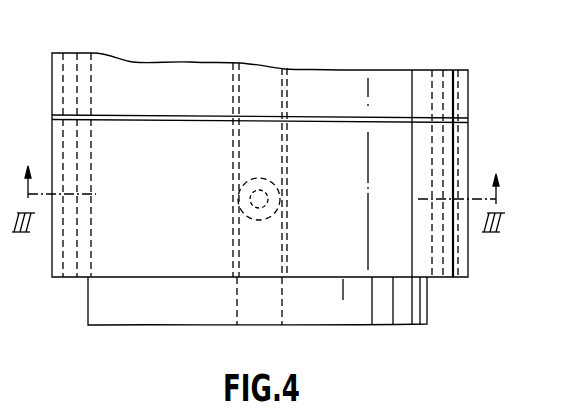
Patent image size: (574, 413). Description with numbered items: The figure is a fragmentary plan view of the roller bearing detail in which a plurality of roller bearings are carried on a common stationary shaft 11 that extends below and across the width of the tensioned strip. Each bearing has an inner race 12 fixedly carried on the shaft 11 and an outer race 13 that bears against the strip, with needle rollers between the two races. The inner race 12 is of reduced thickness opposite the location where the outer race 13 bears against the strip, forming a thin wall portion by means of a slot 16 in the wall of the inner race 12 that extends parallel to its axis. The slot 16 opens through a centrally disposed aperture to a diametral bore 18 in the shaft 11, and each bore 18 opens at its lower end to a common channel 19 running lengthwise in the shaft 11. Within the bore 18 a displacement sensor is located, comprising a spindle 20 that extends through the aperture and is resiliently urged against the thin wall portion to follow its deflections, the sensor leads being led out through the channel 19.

The stationary shaft 11 is at (428, 300).
The inner race 12 is at (437, 80).
The outer race 13 is at (351, 194).
The slot 16 is at (284, 230).
The diametral bore 18 is at (244, 185).
The common channel 19 is at (285, 133).
The spindle 20 is at (253, 195).